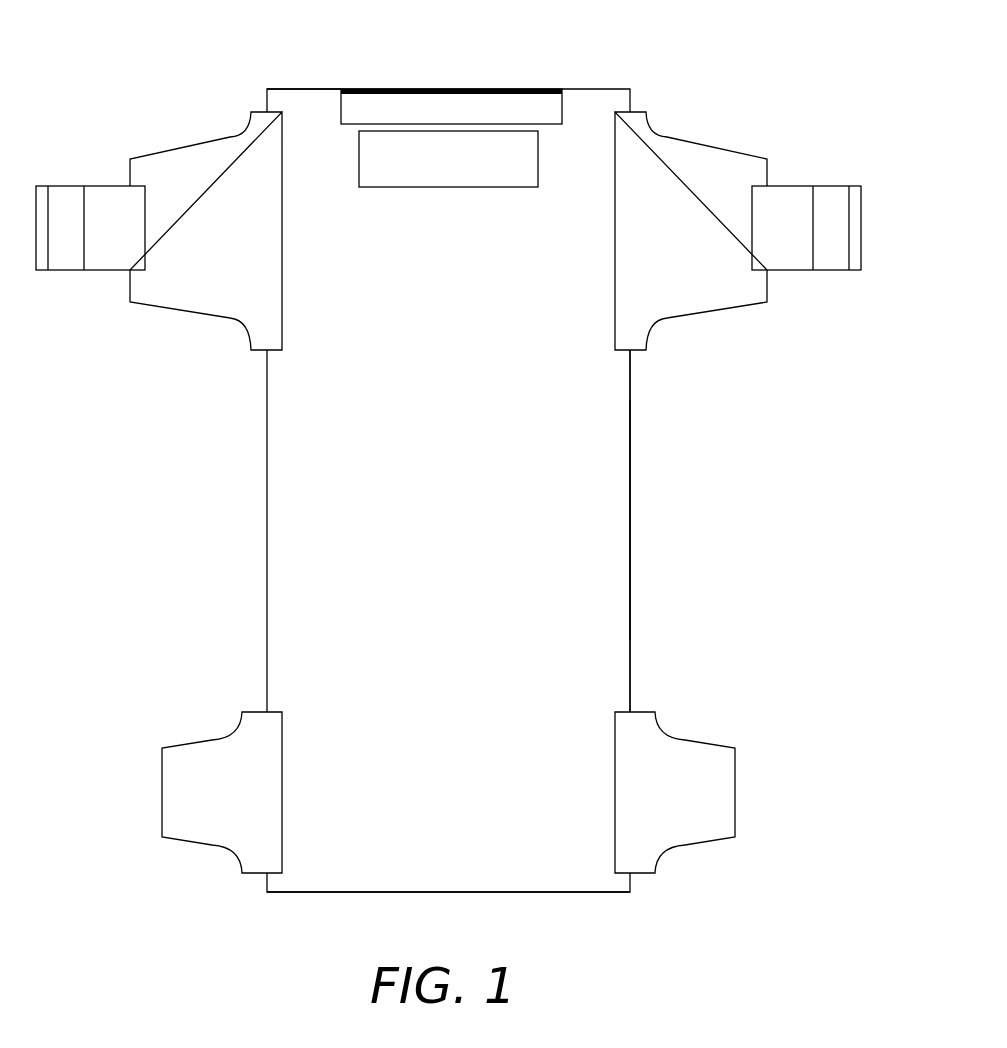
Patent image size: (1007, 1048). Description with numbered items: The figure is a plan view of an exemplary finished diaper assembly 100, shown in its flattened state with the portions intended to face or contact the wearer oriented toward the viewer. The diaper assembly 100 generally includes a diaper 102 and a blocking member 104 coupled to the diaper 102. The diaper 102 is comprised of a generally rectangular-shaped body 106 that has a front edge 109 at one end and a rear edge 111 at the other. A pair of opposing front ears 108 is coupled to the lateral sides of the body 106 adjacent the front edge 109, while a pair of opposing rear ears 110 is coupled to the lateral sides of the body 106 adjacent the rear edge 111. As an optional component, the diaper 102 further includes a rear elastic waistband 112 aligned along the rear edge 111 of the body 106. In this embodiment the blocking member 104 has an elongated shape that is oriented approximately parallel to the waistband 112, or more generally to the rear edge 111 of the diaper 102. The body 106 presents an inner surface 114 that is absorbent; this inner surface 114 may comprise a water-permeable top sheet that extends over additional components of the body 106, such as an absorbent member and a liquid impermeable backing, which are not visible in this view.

The diaper assembly 100 is at (706, 63).
The diaper 102 is at (573, 78).
The blocking member 104 is at (378, 155).
The body 106 is at (646, 443).
The front ears 108 is at (235, 827).
The front edge 109 is at (320, 892).
The rear ears 110 is at (182, 168).
The rear edge 111 is at (327, 88).
The rear elastic waistband 112 is at (430, 100).
The inner surface 114 is at (598, 530).